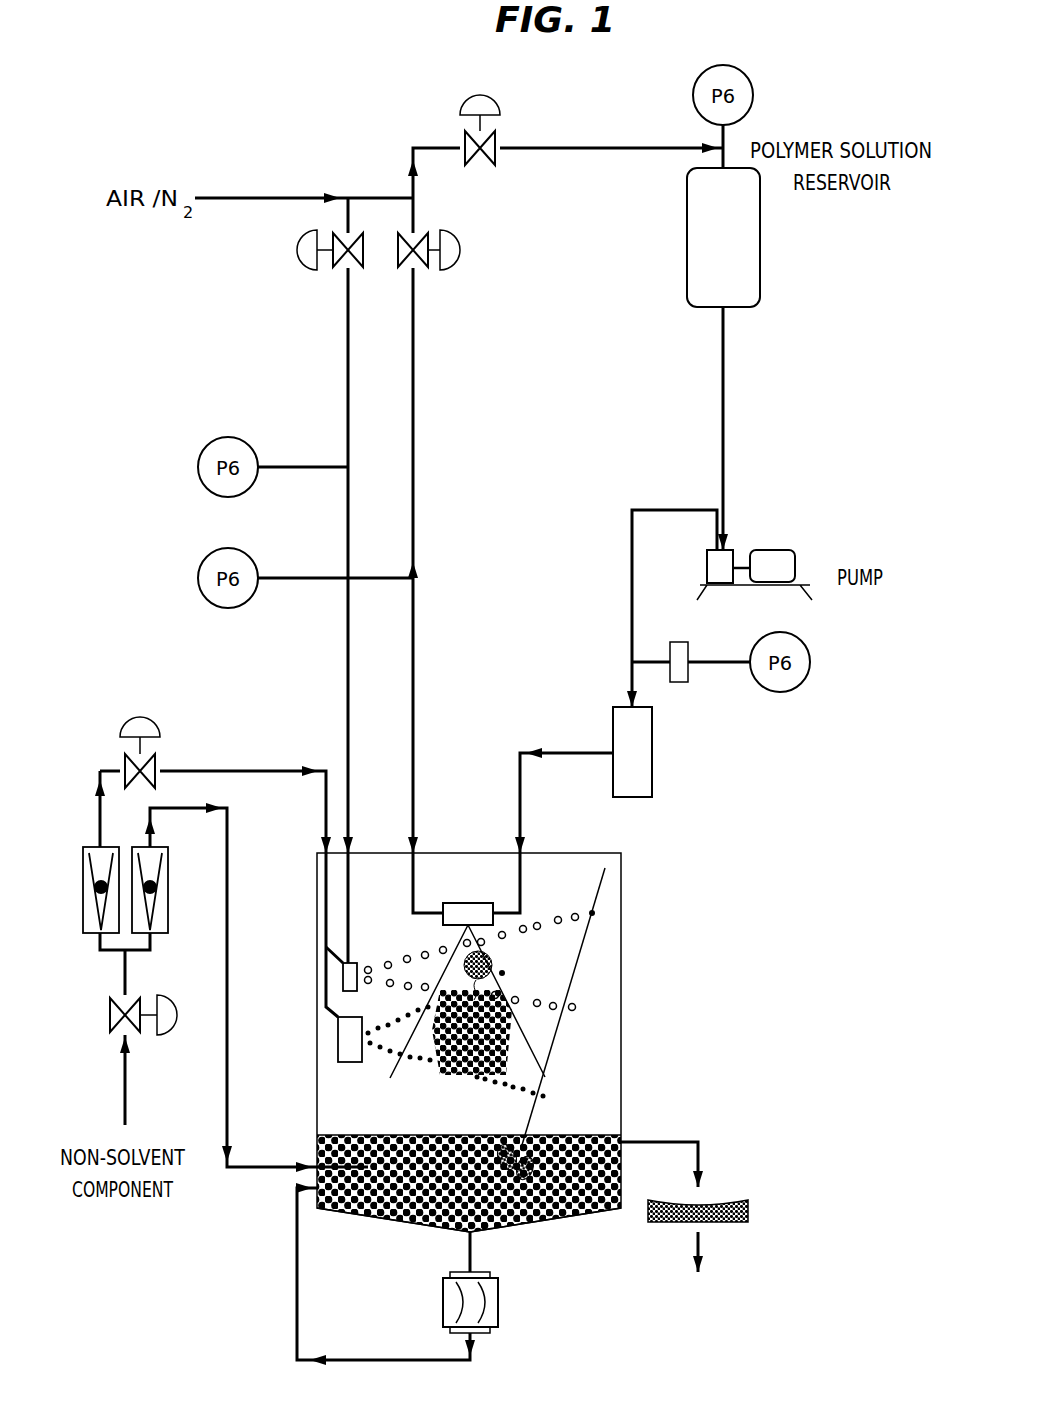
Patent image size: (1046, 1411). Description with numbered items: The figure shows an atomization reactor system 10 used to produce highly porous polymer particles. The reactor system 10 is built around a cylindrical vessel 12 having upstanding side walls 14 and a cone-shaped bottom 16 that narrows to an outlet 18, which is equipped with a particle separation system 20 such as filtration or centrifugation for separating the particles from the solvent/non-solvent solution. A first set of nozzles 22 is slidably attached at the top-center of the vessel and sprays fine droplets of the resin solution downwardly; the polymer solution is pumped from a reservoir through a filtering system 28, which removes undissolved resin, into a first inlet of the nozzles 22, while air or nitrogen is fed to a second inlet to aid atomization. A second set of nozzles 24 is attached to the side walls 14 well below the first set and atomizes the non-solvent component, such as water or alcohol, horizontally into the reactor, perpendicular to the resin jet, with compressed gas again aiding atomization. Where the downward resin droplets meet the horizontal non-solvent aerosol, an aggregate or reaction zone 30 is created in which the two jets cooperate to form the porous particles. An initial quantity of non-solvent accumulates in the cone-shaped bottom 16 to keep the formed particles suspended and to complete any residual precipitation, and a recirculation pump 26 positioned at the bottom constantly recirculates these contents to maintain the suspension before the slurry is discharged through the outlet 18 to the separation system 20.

The reactor system 10 is at (222, 704).
The cylindrical vessel 12 is at (342, 1102).
The side walls 14 is at (343, 990).
The cone-shaped bottom 16 is at (380, 1222).
The outlet 18 is at (698, 1155).
The particle separation system 20 is at (748, 1212).
The first set of nozzles 22 is at (483, 902).
The second set of nozzles 24 is at (338, 1047).
The recirculation pump 26 is at (443, 1300).
The filtering system 28 is at (652, 780).
The aggregate zone 30 is at (497, 965).